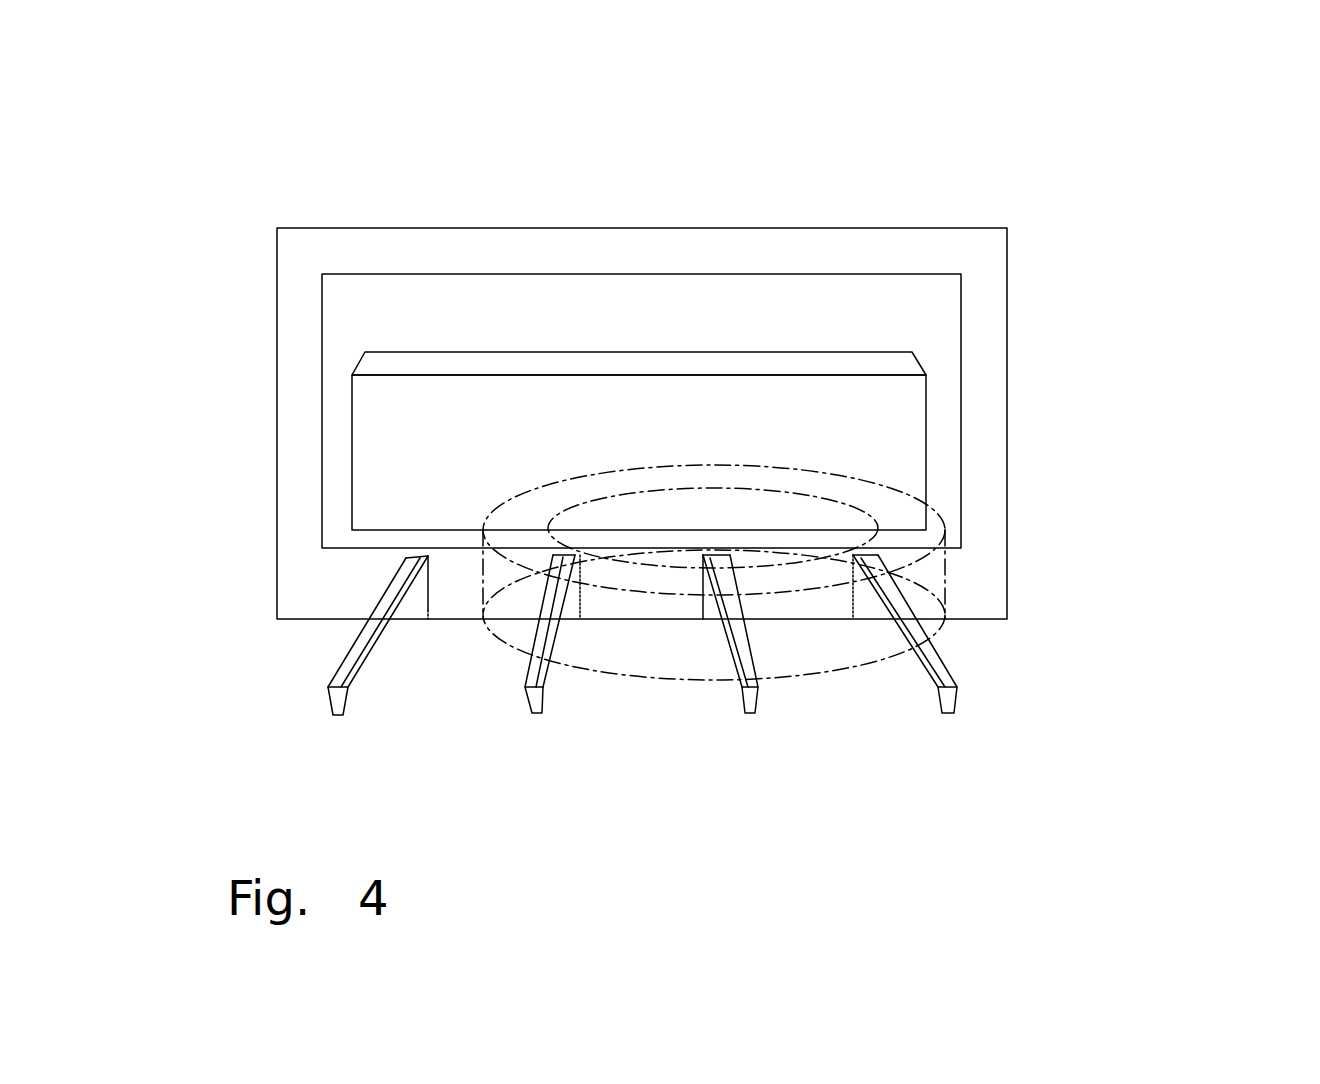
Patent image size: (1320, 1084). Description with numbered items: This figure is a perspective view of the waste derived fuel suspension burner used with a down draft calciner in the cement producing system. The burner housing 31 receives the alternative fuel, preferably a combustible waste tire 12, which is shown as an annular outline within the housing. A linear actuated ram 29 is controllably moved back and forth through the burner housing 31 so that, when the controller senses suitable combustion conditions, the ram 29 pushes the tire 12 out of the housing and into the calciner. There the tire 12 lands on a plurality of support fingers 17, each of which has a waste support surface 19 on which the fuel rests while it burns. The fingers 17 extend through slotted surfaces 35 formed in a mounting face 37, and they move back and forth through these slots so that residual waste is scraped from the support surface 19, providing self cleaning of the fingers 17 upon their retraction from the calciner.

The combustible waste tires 12 is at (850, 475).
The support fingers 17 is at (388, 640).
The waste support surface 19 is at (348, 657).
The linear actuated ram 29 is at (527, 352).
The burner housing 31 is at (743, 228).
The slotted surfaces 35 is at (428, 562).
The mounting face 37 is at (998, 563).